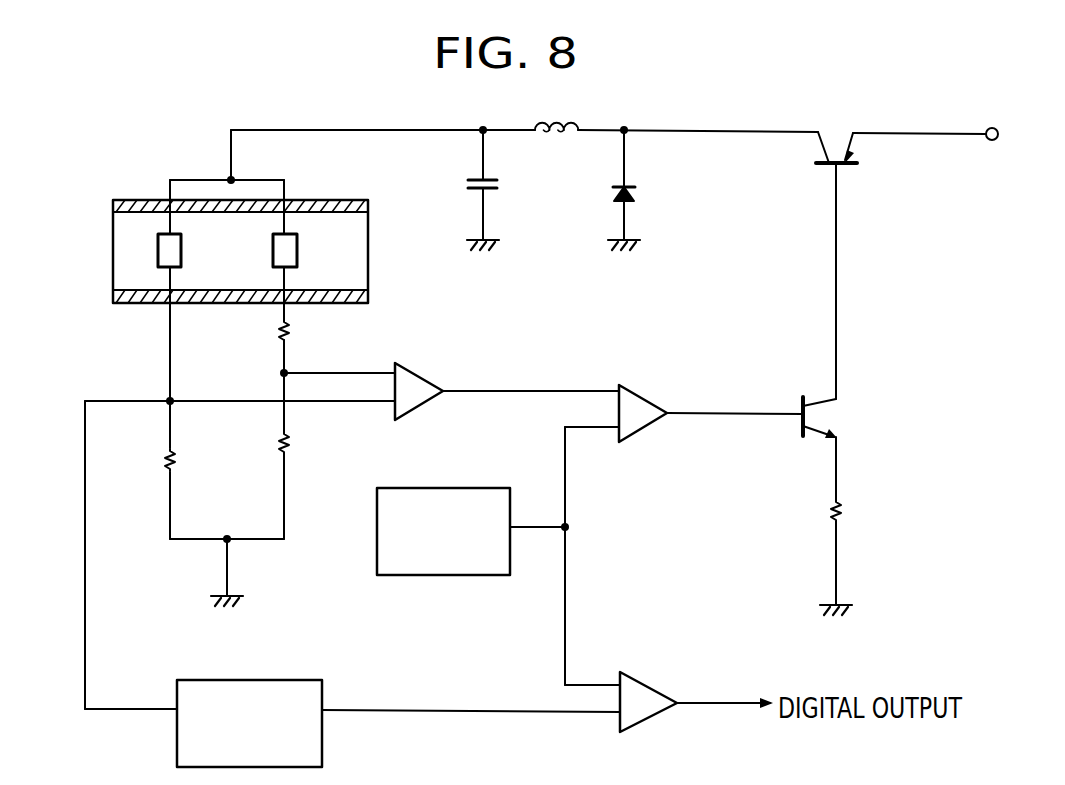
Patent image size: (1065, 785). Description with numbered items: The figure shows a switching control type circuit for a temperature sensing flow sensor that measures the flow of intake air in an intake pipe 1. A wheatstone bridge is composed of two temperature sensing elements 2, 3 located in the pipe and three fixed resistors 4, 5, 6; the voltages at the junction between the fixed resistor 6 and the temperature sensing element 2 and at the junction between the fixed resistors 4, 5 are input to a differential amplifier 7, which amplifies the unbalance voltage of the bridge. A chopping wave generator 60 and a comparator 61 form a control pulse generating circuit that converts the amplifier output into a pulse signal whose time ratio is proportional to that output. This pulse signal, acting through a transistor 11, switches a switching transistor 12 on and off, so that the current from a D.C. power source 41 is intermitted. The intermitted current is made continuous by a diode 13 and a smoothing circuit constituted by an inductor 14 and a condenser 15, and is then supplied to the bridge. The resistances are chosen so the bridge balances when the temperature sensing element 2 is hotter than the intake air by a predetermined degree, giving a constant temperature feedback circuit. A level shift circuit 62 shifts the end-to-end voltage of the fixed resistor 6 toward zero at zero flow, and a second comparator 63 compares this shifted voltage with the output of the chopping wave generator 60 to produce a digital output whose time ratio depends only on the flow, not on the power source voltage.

The intake pipe 1 is at (310, 201).
The temperature sensing element 2 is at (158, 250).
The temperature sensing element 3 is at (297, 250).
The fixed resistor 4 is at (312, 331).
The fixed resistor 5 is at (291, 443).
The fixed resistor 6 is at (177, 460).
The differential amplifier 7 is at (410, 380).
The transistor 11 is at (828, 418).
The switching transistor 12 is at (860, 157).
The diode 13 is at (637, 193).
The inductor 14 is at (560, 119).
The condenser 15 is at (499, 184).
The D.C. power source 41 is at (994, 130).
The chopping wave generator 60 is at (437, 488).
The comparator 61 is at (643, 393).
The level shift circuit 62 is at (258, 680).
The comparator 63 is at (640, 678).